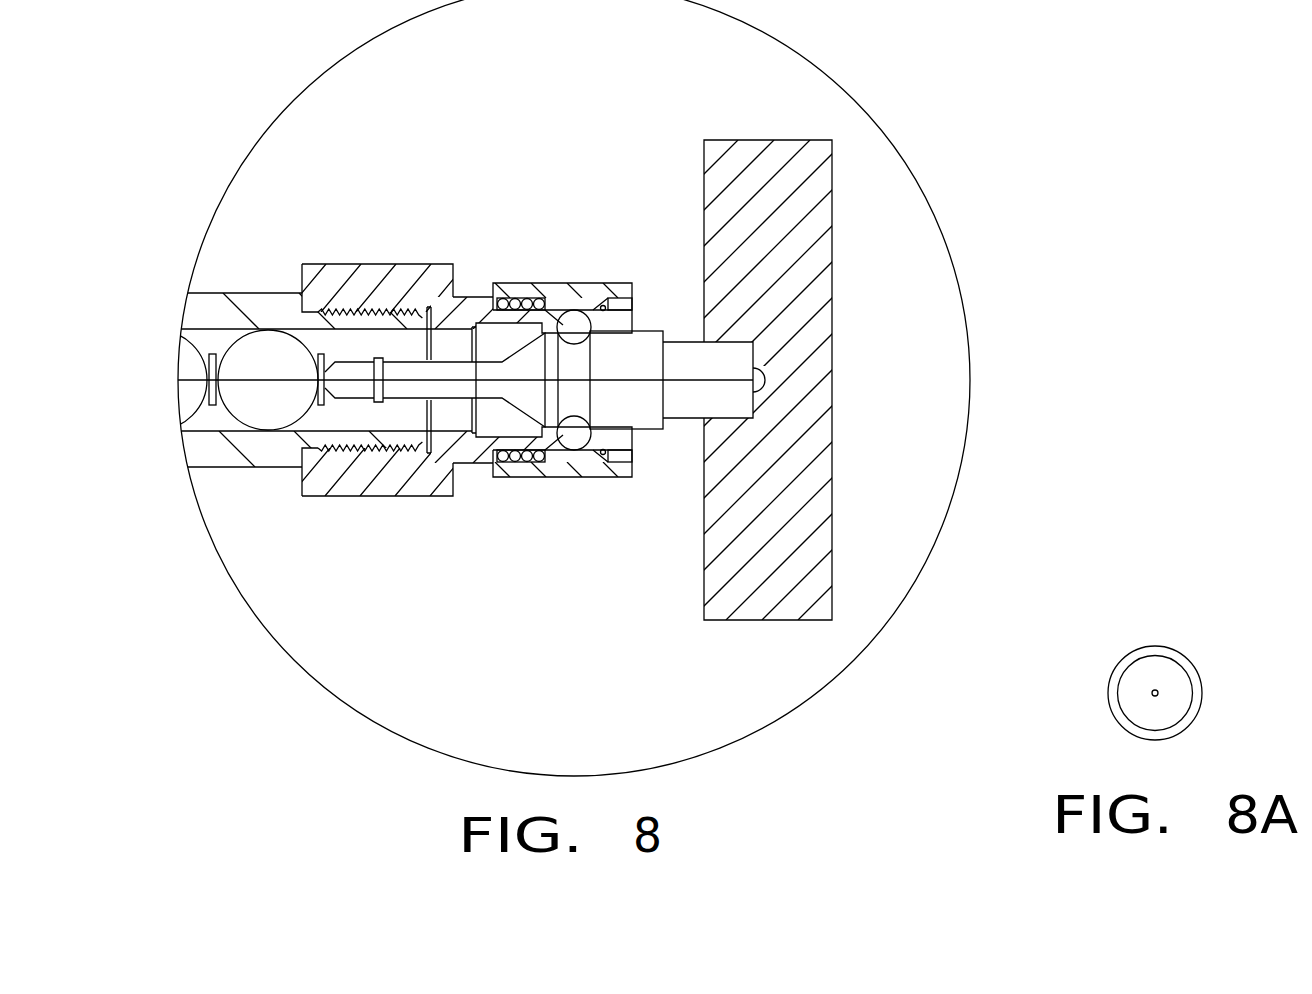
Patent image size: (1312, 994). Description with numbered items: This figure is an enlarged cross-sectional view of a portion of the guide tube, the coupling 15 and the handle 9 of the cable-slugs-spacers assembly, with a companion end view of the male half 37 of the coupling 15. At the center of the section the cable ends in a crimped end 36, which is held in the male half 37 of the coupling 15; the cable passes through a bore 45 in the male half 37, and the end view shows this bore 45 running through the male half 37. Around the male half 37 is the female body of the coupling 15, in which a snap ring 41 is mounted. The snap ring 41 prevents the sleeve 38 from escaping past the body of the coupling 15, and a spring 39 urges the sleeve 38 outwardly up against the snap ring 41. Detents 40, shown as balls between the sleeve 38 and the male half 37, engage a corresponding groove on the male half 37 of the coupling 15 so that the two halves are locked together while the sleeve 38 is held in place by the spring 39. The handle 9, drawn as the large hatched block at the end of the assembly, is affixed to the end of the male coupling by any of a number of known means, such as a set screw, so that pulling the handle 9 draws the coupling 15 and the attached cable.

In FIG. 8, the handle 9 is at (783, 323).
In FIG. 8, the coupling 15 is at (355, 288).
In FIG. 8, the crimped end of the cable 36 is at (766, 382).
In FIG. 8, the male half of the coupling 37 is at (692, 398).
In FIG. 8, the sleeve 38 is at (552, 468).
In FIG. 8, the spring 39 is at (503, 473).
In FIG. 8, the detents 40 is at (573, 441).
In FIG. 8, the snap ring 41 is at (603, 306).
In FIG. 8A, the bore 45 is at (1158, 691).